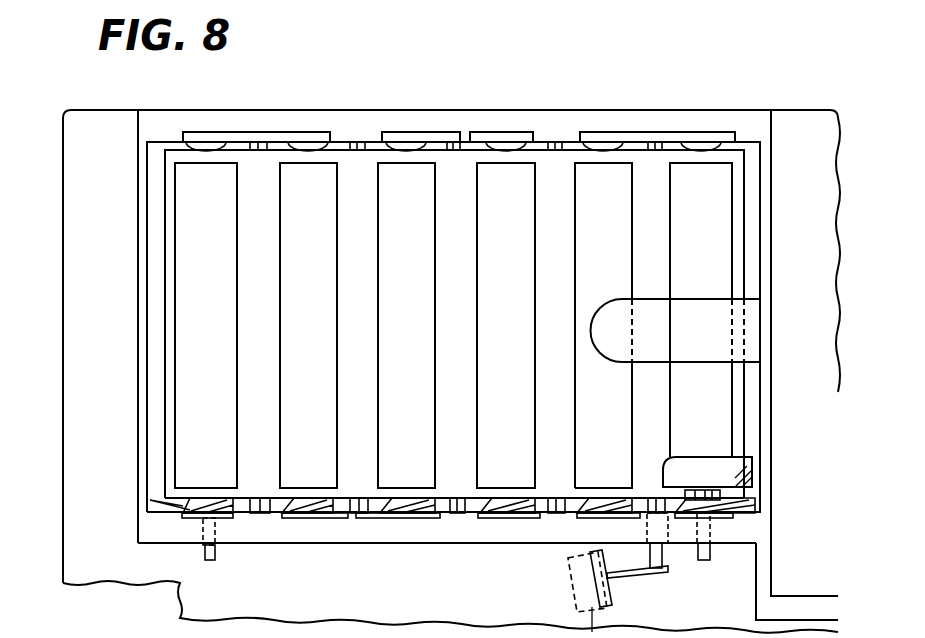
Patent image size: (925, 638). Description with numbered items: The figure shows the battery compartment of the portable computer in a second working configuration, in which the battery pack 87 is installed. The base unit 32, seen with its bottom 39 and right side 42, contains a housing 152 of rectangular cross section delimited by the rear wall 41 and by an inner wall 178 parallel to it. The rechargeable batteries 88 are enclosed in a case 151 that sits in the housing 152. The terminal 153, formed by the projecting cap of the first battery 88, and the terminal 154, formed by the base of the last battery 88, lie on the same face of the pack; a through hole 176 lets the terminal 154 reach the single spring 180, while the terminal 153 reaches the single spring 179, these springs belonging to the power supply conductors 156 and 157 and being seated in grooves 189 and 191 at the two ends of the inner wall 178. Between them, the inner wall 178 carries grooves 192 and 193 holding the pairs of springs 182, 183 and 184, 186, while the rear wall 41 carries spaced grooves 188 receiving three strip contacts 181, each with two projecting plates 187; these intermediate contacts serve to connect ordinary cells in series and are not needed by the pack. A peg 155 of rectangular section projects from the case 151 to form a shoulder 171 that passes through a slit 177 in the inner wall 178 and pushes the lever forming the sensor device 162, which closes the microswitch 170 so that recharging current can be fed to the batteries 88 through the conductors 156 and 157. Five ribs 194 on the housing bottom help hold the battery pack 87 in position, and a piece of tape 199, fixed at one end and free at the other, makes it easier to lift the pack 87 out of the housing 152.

The base unit 32 is at (766, 104).
The bottom 39 is at (121, 128).
The rear part 41 is at (552, 132).
The right side 42 is at (63, 168).
The battery pack 87 is at (125, 416).
The batteries 88 is at (282, 245).
The case 151 is at (157, 330).
The housing 152 is at (756, 210).
The terminal 153 is at (208, 503).
The terminal 154 is at (695, 497).
The peg 155 is at (653, 503).
The power supply conductor 156 is at (213, 556).
The power supply conductor 157 is at (712, 548).
The sensor device 162 is at (620, 597).
The microswitch 170 is at (575, 588).
The shoulder 171 is at (662, 566).
The through hole 176 is at (713, 492).
The slit 177 is at (652, 552).
The inner wall 178 is at (272, 532).
The single spring 179 is at (190, 506).
The single spring 180 is at (758, 500).
The strip contacts 181 is at (635, 138).
The spring 182 is at (306, 505).
The spring 183 is at (408, 519).
The spring 184 is at (510, 505).
The spring 186 is at (613, 503).
The projecting plates 187 is at (298, 150).
The grooves 188 is at (278, 140).
The groove 189 is at (170, 513).
The groove 191 is at (728, 515).
The groove 192 is at (347, 513).
The groove 193 is at (537, 519).
The ribs 194 is at (457, 143).
The tape 199 is at (690, 310).